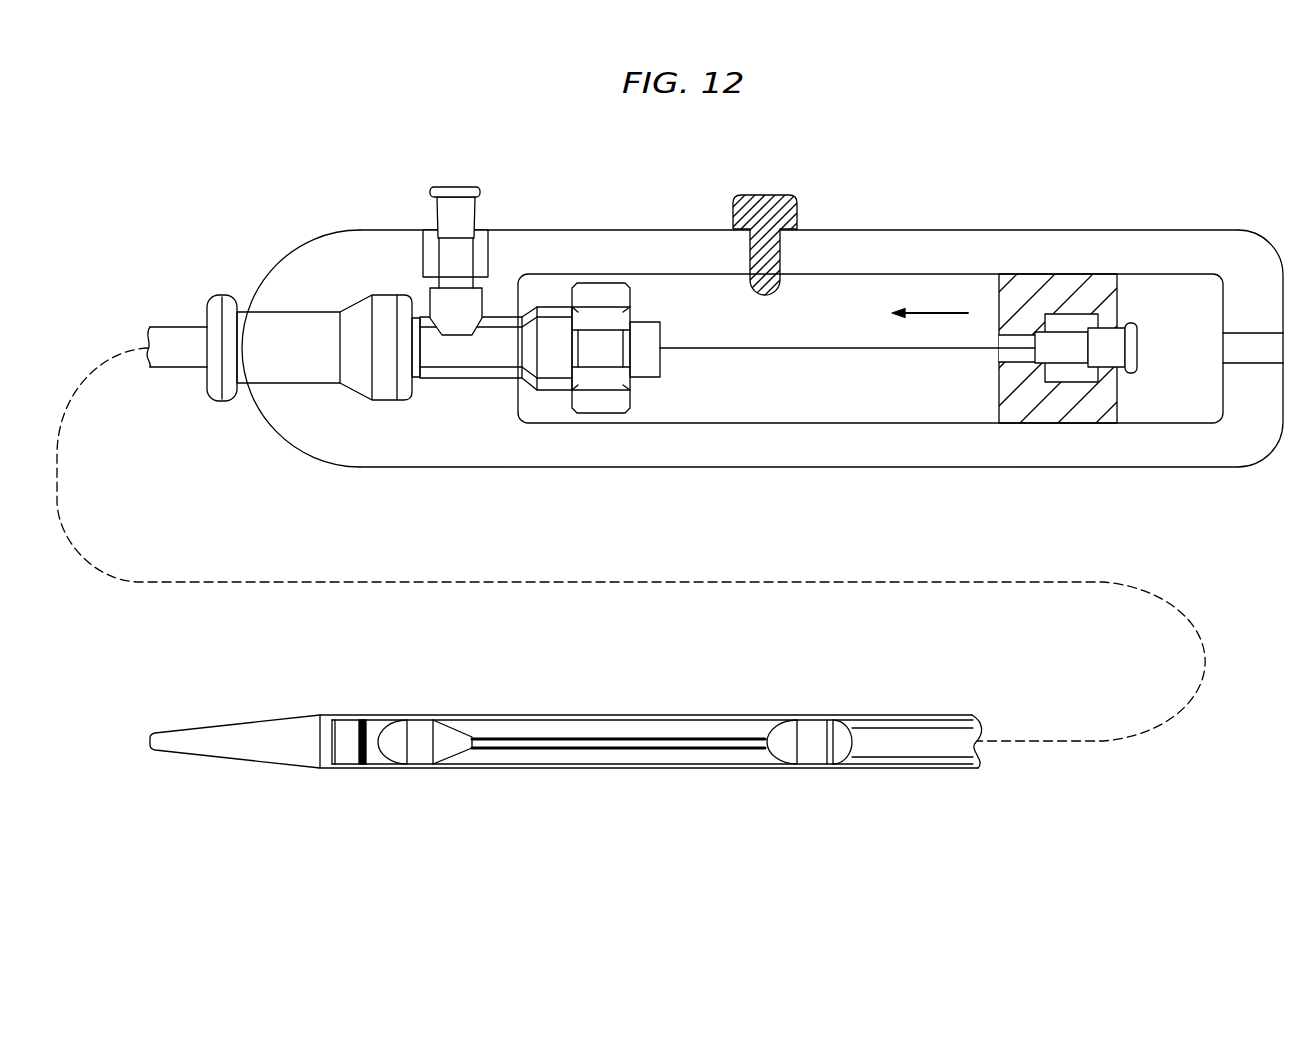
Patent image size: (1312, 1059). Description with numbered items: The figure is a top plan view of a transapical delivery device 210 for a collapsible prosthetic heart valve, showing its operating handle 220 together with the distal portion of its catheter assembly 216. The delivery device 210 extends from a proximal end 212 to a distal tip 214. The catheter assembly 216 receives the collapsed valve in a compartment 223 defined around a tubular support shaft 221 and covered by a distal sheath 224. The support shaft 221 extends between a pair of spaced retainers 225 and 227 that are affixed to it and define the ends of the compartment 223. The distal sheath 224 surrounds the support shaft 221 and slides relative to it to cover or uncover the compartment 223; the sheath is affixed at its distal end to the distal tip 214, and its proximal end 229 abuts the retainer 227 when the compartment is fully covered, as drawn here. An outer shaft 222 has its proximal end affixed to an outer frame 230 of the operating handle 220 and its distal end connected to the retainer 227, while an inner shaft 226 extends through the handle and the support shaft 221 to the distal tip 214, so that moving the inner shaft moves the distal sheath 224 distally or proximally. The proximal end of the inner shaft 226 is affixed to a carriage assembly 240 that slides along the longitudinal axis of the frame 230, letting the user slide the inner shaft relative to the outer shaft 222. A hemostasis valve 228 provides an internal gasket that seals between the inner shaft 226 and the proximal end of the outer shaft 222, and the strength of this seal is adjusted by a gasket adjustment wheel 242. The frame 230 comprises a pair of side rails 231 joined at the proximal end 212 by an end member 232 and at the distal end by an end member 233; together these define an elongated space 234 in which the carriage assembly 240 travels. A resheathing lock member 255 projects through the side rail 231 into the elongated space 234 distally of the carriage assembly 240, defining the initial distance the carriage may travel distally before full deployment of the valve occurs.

The transapical delivery device 210 is at (212, 170).
The proximal end 212 is at (1275, 442).
The distal tip 214 is at (200, 754).
The catheter assembly 216 is at (600, 685).
The operating handle 220 is at (1104, 157).
The tubular support shaft 221 is at (733, 735).
The outer shaft 222 is at (162, 368).
The compartment 223 is at (614, 766).
The distal sheath 224 is at (500, 714).
The retainer 225 is at (417, 769).
The inner shaft 226 is at (896, 348).
The retainer 227 is at (770, 764).
The hemostasis valve 228 is at (494, 318).
The proximal end of distal sheath 229 is at (828, 770).
The outer frame 230 is at (1020, 226).
The side rails 231 is at (943, 230).
The end member 232 is at (1232, 247).
The end member 233 is at (286, 263).
The elongated space 234 is at (838, 408).
The carriage assembly 240 is at (1048, 428).
The gasket adjustment wheel 242 is at (600, 283).
The resheathing lock member 255 is at (781, 195).